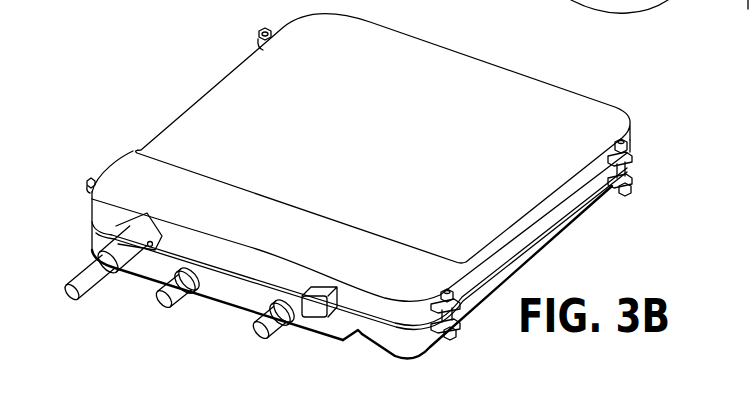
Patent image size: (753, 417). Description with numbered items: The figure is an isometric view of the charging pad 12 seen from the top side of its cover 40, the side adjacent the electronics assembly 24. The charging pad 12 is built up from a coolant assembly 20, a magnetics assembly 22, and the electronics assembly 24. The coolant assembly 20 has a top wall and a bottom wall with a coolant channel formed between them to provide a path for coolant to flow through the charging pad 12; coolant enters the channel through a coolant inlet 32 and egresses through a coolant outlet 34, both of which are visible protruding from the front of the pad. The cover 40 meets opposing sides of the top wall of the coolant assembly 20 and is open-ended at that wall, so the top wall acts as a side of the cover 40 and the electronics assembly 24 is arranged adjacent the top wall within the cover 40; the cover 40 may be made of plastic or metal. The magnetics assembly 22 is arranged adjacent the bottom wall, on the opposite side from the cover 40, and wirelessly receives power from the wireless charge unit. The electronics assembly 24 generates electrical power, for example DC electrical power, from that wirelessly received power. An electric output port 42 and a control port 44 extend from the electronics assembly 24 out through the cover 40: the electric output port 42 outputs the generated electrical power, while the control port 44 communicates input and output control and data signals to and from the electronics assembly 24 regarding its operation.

The charging pad 12 is at (130, 66).
The coolant assembly 20 is at (232, 301).
The magnetics assembly 22 is at (556, 255).
The electronics assembly 24 is at (249, 86).
The coolant inlet 32 is at (152, 300).
The coolant outlet 34 is at (270, 343).
The cover 40 is at (445, 72).
The electric output port 42 is at (82, 277).
The control port 44 is at (347, 347).